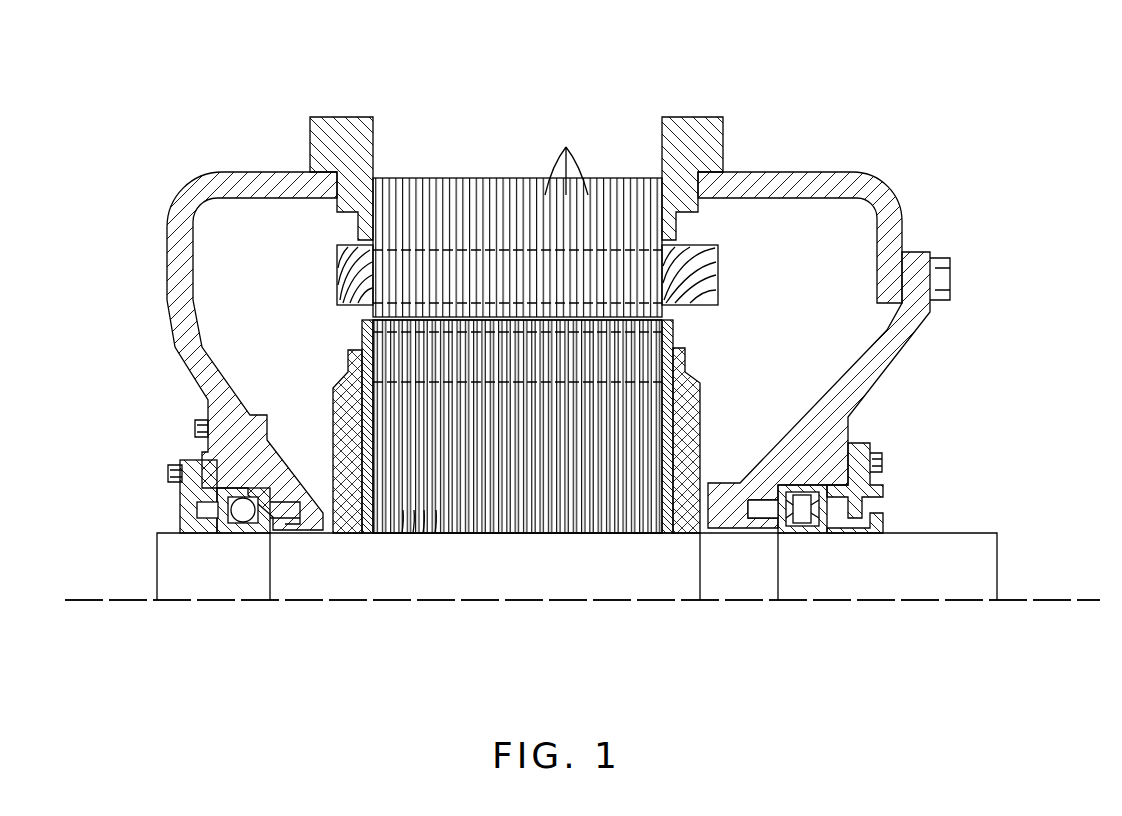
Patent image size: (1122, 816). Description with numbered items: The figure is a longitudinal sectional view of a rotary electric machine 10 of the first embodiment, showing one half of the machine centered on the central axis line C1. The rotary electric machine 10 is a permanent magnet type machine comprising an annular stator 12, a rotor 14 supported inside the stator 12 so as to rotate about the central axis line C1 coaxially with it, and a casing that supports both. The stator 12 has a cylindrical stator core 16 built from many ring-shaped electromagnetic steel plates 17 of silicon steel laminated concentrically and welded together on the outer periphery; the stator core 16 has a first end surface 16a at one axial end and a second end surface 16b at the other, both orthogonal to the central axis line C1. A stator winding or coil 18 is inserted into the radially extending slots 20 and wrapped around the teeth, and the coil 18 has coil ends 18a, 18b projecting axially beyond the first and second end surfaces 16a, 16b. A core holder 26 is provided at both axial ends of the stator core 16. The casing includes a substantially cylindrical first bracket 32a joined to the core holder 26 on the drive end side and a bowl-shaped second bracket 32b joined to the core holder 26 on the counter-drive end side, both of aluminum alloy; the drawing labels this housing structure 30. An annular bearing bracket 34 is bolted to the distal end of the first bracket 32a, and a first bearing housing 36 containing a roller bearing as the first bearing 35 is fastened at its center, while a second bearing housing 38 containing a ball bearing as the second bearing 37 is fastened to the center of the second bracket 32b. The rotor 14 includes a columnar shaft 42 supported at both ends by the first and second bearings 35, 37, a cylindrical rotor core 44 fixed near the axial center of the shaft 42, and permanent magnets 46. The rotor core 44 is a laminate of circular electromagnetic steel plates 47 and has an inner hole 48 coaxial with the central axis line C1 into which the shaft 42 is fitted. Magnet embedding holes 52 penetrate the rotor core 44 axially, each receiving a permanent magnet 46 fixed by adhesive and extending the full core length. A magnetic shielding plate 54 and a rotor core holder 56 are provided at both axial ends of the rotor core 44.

The rotary electric machine 10 is at (816, 100).
The stator 12 is at (517, 186).
The rotor 14 is at (473, 607).
The stator core 16 is at (494, 195).
The first end surface 16a is at (664, 210).
The second end surface 16b is at (370, 208).
The electromagnetic steel plates 17 is at (566, 158).
The stator winding (coil) 18 is at (525, 273).
The coil end 18a is at (718, 290).
The coil end 18b is at (337, 272).
The slot 20 is at (612, 258).
The core holder 26 is at (350, 125).
The housing 30 is at (499, 314).
The first bracket 32a is at (850, 182).
The second bracket 32b is at (178, 220).
The bearing bracket 34 is at (886, 362).
The first bearing 35 is at (808, 535).
The first bearing housing 36 is at (892, 469).
The second bearing 37 is at (230, 535).
The second bearing housing 38 is at (178, 442).
The shaft 42 is at (960, 588).
The rotor core 44 is at (518, 492).
The permanent magnets 46 is at (410, 348).
The electromagnetic steel plates 47 is at (435, 533).
The inner hole 48 is at (548, 535).
The magnet embedding holes 52 is at (673, 342).
The magnetic shielding plate 54 is at (362, 400).
The rotor core holder 56 is at (344, 441).
The central axis line C1 is at (582, 570).